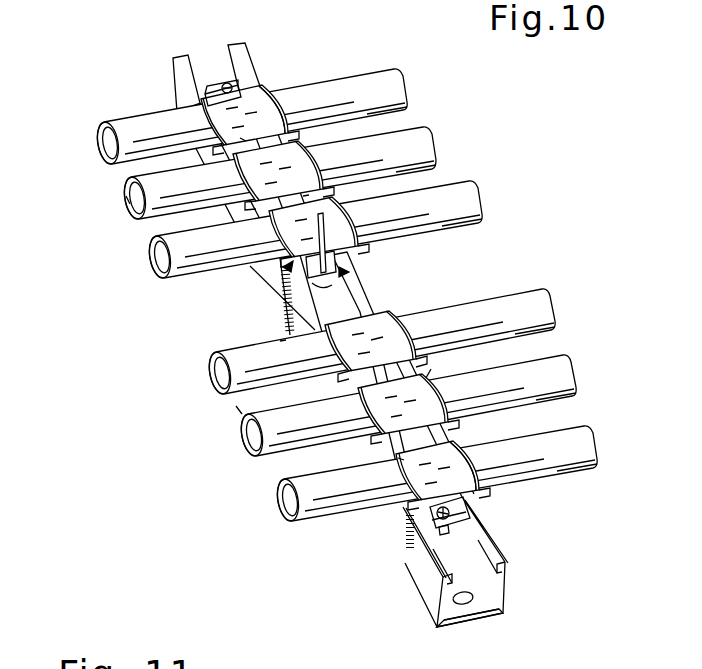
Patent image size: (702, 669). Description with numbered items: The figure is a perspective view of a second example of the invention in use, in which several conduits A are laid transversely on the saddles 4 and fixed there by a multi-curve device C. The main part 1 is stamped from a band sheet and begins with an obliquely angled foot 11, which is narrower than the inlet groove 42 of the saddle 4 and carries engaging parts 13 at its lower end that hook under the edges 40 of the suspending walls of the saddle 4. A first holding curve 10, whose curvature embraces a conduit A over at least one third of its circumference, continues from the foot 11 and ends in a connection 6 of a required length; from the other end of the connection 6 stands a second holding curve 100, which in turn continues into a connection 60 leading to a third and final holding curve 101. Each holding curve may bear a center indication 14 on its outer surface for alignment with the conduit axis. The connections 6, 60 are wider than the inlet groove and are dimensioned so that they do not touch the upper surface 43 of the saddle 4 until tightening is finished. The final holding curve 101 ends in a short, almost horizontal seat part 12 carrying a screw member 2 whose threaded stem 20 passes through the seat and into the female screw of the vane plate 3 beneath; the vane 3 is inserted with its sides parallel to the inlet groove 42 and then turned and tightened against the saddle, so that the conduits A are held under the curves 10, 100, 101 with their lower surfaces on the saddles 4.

The conduit A is at (387, 83).
The device C is at (313, 148).
The main part 1 is at (440, 400).
The screw member 2 is at (226, 86).
The vane plate 3 is at (488, 520).
The saddle 4 is at (456, 583).
The connection 6 is at (307, 197).
The first holding curve 10 is at (335, 222).
The foot 11 is at (357, 230).
The seat part 12 is at (244, 86).
The engaging parts 13 is at (404, 222).
The center indication 14 is at (330, 217).
The stem 20 is at (447, 536).
The edges 40 is at (507, 573).
The inlet groove 42 is at (473, 604).
The upper surface 43 is at (492, 543).
The connection 60 is at (243, 140).
The second holding curve 100 is at (128, 200).
The third holding curve 101 is at (268, 110).